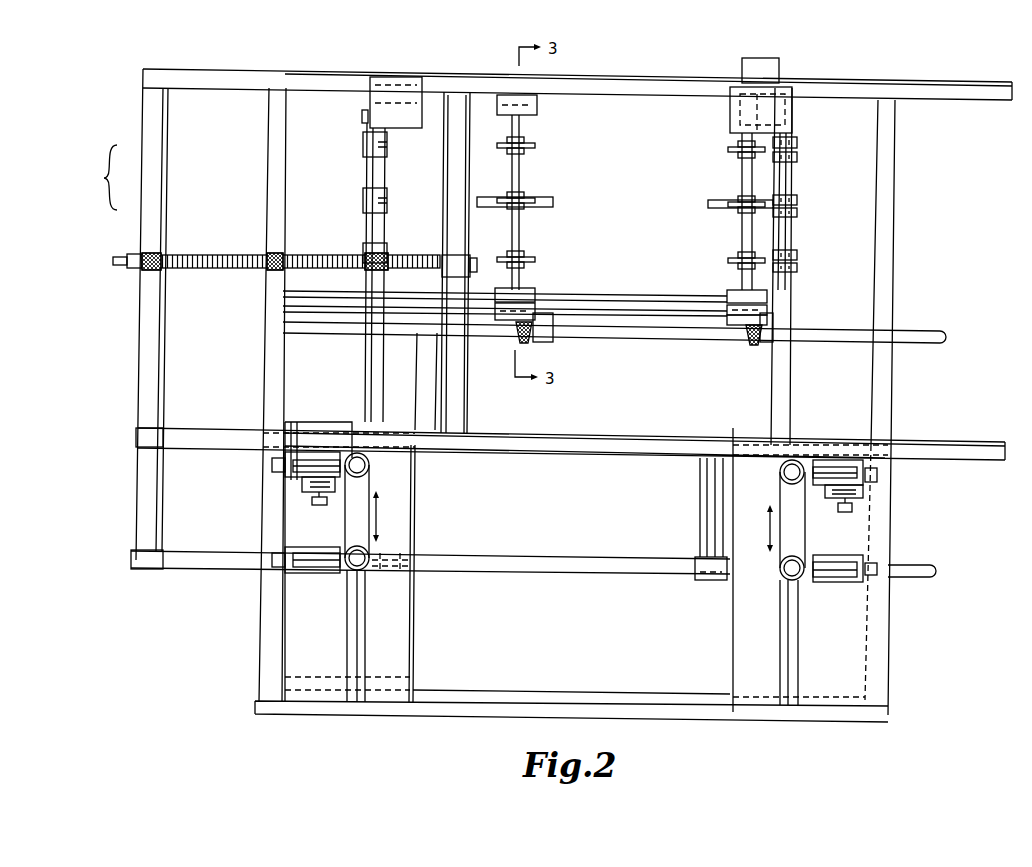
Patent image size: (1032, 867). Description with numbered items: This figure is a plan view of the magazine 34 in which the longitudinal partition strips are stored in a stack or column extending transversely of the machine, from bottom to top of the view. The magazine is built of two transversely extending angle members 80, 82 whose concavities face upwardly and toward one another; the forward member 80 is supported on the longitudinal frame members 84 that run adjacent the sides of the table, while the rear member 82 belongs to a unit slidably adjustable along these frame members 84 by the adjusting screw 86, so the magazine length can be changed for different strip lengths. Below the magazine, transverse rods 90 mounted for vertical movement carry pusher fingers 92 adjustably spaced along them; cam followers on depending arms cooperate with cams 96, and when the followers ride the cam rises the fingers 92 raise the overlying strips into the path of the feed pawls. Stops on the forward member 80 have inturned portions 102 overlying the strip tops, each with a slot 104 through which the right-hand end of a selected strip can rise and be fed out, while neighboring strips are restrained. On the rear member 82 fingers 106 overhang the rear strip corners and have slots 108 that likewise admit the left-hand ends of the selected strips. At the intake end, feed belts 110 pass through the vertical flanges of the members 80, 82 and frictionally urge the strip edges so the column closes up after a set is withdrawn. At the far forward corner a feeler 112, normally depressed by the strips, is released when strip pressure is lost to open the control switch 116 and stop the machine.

The magazine 34 is at (97, 177).
The forward angle member 80 is at (793, 394).
The rear angle member 82 is at (364, 399).
The longitudinal frame members 84 is at (974, 99).
The adjusting screw 86 is at (233, 270).
The transverse rods 90 is at (512, 178).
The pusher fingers 92 is at (535, 146).
The cams 96 is at (553, 204).
The inturned portions 102 is at (798, 141).
The slot 104 is at (800, 156).
The fingers 106 is at (363, 197).
The slots 108 is at (380, 142).
The feed belts 110 is at (371, 489).
The feeler 112 is at (757, 92).
The control switch 116 is at (780, 59).